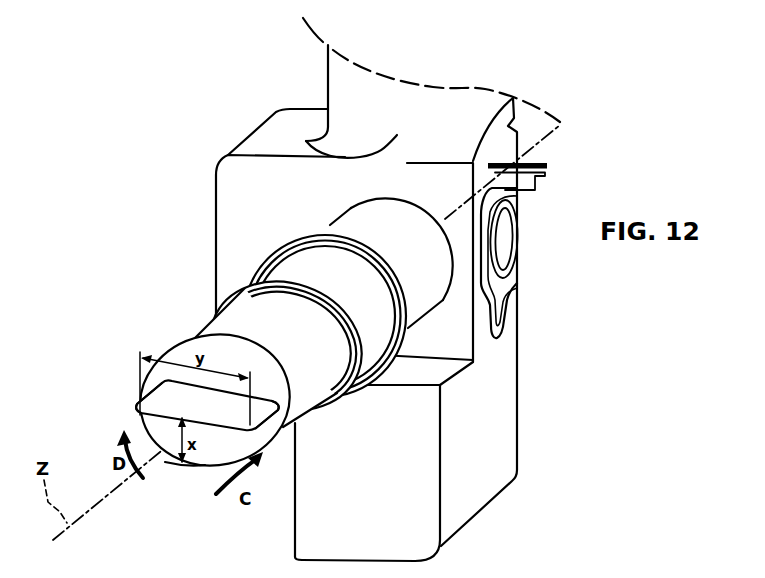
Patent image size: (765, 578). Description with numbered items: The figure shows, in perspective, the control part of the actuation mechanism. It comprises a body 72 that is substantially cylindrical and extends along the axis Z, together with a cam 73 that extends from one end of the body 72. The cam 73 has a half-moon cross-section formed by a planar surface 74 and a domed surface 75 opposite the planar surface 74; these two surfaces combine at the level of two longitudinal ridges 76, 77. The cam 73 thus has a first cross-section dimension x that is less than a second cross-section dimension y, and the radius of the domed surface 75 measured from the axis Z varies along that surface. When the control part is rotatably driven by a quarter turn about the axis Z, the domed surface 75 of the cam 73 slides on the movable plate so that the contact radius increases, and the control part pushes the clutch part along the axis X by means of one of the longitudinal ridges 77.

The body 72 is at (257, 317).
The cam 73 is at (208, 453).
The planar surface 74 is at (176, 402).
The domed surface 75 is at (188, 470).
The longitudinal ridge 76 is at (137, 406).
The longitudinal ridge 77 is at (262, 430).